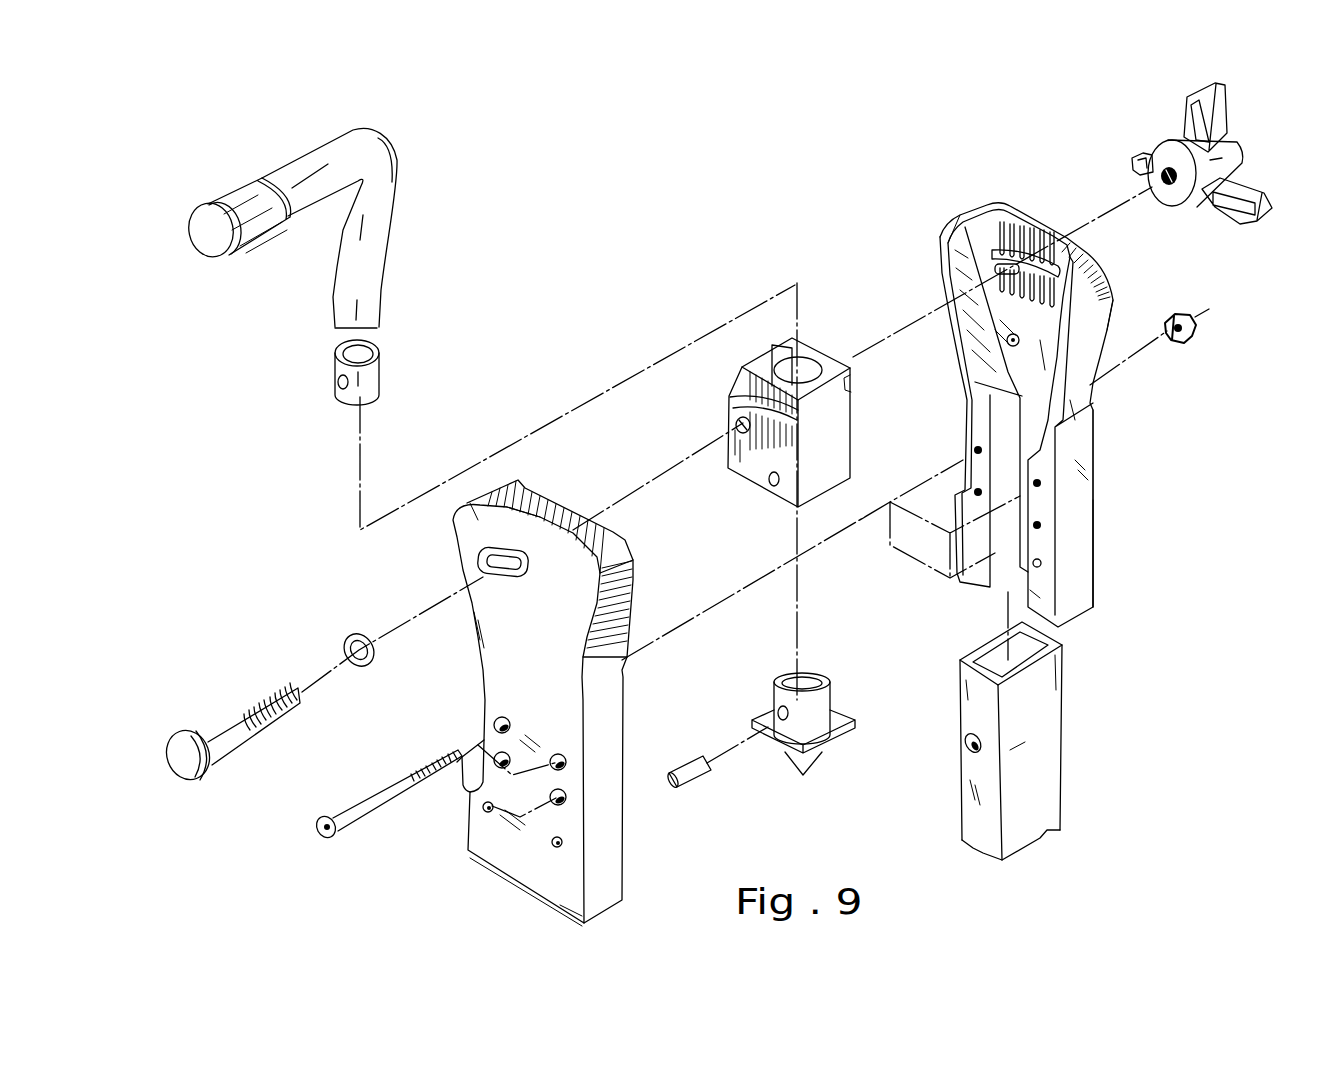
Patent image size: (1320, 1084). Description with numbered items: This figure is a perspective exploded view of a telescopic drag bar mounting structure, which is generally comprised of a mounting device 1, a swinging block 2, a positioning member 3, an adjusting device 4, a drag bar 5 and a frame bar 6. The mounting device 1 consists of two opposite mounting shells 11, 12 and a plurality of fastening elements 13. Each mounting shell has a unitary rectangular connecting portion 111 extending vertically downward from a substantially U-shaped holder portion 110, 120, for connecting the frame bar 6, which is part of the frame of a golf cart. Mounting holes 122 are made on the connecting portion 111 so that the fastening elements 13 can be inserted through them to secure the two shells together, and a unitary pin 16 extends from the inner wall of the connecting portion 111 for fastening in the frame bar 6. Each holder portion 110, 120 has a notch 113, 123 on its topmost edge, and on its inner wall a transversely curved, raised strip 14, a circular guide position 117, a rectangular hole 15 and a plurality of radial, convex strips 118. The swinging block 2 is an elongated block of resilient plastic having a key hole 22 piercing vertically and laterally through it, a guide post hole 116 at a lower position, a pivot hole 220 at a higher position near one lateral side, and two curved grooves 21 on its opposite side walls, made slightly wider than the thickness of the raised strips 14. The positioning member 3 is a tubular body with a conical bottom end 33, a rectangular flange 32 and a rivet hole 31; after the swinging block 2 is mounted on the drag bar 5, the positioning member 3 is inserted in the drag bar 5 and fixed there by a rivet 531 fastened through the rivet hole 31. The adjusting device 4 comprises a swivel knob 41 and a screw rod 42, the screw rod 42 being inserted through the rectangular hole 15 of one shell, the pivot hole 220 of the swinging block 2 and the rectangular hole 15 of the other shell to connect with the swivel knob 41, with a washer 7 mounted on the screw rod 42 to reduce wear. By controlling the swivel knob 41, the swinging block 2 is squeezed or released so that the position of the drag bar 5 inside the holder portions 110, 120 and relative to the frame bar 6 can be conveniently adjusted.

The mounting device 1 is at (1026, 390).
The swinging block 2 is at (789, 422).
The positioning member 3 is at (814, 721).
The adjusting device 4 is at (1208, 177).
The drag bar 5 is at (381, 302).
The frame bar 6 is at (1063, 740).
The washer 7 is at (357, 632).
The mounting shell 11 is at (1097, 475).
The mounting shell 12 is at (535, 670).
The fastening elements 13 is at (400, 784).
The transversely curved, raised strip 14 is at (1057, 257).
The rectangular hole 15 is at (478, 556).
The pin 16 is at (1040, 523).
The curved grooves 21 is at (732, 401).
The key hole 22 is at (803, 363).
The rivet hole 31 is at (334, 381).
The rectangular flange 32 is at (846, 733).
The conical bottom end 33 is at (794, 767).
The swivel knob 41 is at (1227, 120).
The screw rod 42 is at (228, 722).
The holder portion 110 is at (1110, 305).
The connecting portion 111 is at (1093, 573).
The notch 113 is at (968, 225).
The guide post hole 116 is at (775, 488).
The circular guide position 117 is at (1007, 341).
The radial, convex strips 118 is at (1013, 233).
The holder portion 120 is at (472, 500).
The mounting holes 122 is at (565, 798).
The notch 123 is at (543, 500).
The pivot hole 220 is at (741, 435).
The rivet 531 is at (683, 760).